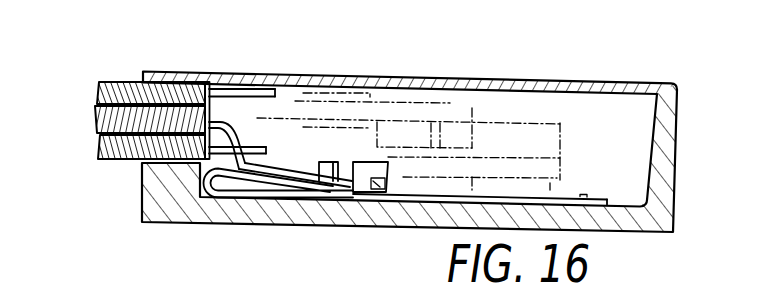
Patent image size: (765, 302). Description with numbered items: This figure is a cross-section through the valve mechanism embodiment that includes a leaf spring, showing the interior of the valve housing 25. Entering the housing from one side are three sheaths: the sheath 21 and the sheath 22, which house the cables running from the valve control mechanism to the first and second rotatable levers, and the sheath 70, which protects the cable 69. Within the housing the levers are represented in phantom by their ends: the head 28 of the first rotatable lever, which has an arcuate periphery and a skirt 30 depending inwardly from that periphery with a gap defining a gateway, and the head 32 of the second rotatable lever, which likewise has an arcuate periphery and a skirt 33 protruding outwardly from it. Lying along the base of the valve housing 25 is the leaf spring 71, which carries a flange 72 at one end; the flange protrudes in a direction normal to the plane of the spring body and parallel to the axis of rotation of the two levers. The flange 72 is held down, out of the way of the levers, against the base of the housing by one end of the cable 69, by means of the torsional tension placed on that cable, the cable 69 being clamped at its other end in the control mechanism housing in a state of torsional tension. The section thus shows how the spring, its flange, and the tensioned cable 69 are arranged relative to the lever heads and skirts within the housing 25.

The sheath 21 is at (106, 82).
The sheath 70 is at (100, 125).
The sheath 22 is at (100, 145).
The valve housing 25 is at (678, 130).
The head 28 is at (405, 101).
The skirt 30 is at (458, 148).
The skirt 33 is at (498, 133).
The head 32 is at (533, 150).
The cable 69 is at (263, 172).
The leaf spring 71 is at (302, 176).
The flange 72 is at (372, 180).